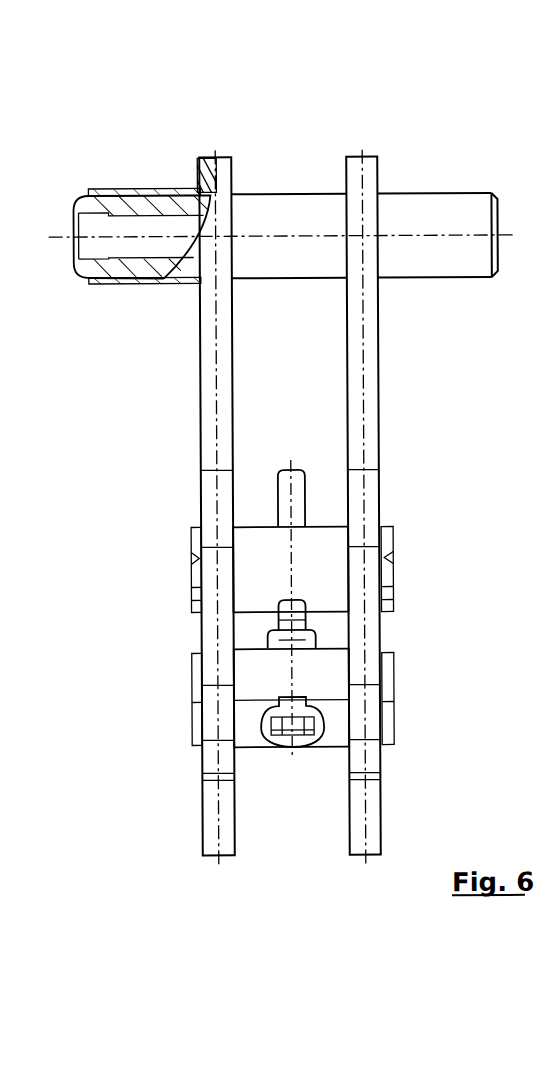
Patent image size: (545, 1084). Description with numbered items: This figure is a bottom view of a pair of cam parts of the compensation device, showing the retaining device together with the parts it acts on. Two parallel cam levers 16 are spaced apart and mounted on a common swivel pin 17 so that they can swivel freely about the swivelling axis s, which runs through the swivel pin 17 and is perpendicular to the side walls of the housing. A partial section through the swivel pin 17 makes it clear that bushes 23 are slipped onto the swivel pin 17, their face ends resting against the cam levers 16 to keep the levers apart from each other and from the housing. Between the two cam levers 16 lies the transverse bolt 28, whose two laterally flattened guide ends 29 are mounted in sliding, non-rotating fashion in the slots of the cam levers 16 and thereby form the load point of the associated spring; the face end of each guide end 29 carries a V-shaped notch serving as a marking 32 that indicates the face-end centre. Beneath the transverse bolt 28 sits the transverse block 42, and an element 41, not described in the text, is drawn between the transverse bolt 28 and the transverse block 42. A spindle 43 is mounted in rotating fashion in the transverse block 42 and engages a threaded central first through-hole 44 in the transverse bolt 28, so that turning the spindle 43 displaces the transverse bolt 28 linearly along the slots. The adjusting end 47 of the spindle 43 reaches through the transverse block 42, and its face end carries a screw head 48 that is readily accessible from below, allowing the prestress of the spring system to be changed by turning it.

The swivelling axis s is at (273, 239).
The cam levers 16 is at (344, 154).
The swivel pin 17 is at (153, 200).
The bushes 23 is at (125, 192).
The transverse bolt 28 is at (268, 568).
The guide ends 29 is at (386, 540).
The marking 32 is at (393, 560).
The bolt 41 is at (297, 637).
The transverse block 42 is at (268, 687).
The spindle 43 is at (297, 494).
The first through-hole 44 is at (280, 603).
The adjusting end 47 is at (318, 733).
The screw head 48 is at (300, 739).